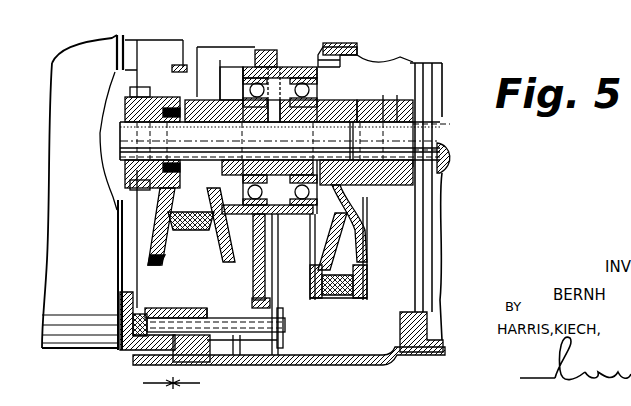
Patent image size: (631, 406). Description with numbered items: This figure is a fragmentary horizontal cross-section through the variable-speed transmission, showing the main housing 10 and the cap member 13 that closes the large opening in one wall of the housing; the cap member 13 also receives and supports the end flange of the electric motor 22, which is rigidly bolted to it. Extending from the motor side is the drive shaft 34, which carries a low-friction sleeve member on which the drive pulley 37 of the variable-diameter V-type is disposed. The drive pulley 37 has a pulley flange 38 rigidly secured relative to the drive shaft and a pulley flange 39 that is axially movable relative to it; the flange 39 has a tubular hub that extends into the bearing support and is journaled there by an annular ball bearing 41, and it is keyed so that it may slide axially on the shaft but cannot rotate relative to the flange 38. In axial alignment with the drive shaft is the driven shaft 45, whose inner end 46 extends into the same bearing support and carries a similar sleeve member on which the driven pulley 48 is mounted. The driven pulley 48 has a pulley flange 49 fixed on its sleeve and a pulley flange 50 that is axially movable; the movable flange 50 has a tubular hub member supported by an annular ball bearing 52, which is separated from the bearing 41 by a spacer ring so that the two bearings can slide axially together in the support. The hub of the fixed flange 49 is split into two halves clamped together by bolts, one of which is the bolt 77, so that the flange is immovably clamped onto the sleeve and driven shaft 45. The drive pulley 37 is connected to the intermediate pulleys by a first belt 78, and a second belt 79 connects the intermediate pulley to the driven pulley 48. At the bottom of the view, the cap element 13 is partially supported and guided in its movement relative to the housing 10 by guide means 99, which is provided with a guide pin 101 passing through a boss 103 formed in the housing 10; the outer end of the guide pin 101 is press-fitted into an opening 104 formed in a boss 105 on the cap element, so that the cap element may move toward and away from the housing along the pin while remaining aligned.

The main housing 10 is at (352, 368).
The cap member 13 is at (157, 352).
The electric motor 22 is at (75, 345).
The drive shaft 34 is at (123, 128).
The drive pulley 37 is at (155, 223).
The pulley flange 38 is at (157, 240).
The pulley flange 39 is at (228, 262).
The annular ball bearing 41 is at (243, 67).
The driven shaft 45 is at (442, 135).
The inner end of driven shaft 46 is at (347, 140).
The driven pulley 48 is at (372, 251).
The pulley flange 49 is at (365, 265).
The pulley flange 50 is at (322, 262).
The annular ball bearing 52 is at (302, 95).
The bolt 77 is at (435, 76).
The first belt 78 is at (205, 232).
The second belt 79 is at (343, 298).
The guide means 99 is at (295, 331).
The guide pin 101 is at (233, 338).
The boss 103 is at (200, 310).
The opening 104 is at (147, 312).
The boss 105 is at (140, 352).